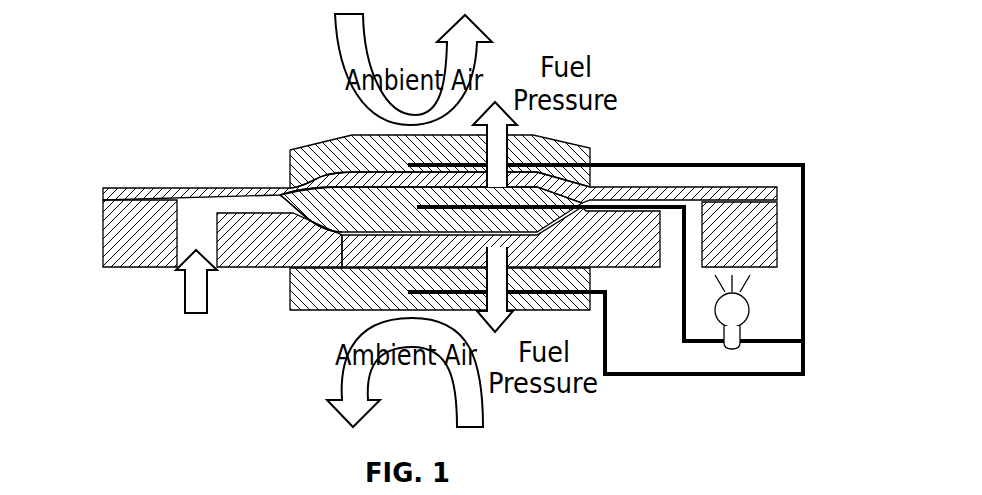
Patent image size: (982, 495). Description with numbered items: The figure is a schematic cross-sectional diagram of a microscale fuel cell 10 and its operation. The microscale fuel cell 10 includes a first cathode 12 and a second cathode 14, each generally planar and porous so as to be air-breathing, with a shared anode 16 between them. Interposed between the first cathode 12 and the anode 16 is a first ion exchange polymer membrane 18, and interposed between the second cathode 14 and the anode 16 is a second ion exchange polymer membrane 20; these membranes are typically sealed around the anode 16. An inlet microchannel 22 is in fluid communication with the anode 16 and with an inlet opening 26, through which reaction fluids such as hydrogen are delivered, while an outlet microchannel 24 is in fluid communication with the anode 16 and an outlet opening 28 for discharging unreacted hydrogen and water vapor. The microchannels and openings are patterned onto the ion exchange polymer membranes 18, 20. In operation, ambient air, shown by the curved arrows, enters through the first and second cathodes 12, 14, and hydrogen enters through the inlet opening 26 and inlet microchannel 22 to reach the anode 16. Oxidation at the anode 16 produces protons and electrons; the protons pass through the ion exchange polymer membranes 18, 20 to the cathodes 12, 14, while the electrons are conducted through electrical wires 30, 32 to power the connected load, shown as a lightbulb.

The microscale fuel cell 10 is at (132, 36).
The first cathode 12 is at (338, 152).
The second cathode 14 is at (312, 297).
The anode 16 is at (303, 213).
The first ion exchange polymer membrane 18 is at (242, 195).
The second ion exchange polymer membrane 20 is at (622, 255).
The inlet microchannel 22 is at (238, 207).
The outlet microchannel 24 is at (630, 208).
The inlet opening 26 is at (197, 235).
The outlet opening 28 is at (693, 221).
The electrical wire 30 is at (775, 163).
The electrical wire 32 is at (785, 377).